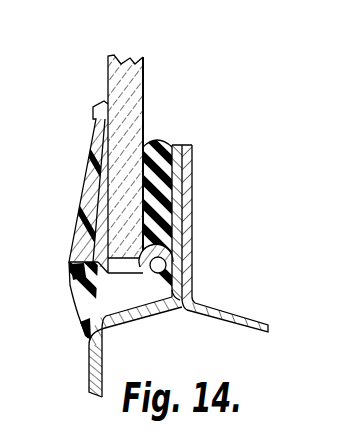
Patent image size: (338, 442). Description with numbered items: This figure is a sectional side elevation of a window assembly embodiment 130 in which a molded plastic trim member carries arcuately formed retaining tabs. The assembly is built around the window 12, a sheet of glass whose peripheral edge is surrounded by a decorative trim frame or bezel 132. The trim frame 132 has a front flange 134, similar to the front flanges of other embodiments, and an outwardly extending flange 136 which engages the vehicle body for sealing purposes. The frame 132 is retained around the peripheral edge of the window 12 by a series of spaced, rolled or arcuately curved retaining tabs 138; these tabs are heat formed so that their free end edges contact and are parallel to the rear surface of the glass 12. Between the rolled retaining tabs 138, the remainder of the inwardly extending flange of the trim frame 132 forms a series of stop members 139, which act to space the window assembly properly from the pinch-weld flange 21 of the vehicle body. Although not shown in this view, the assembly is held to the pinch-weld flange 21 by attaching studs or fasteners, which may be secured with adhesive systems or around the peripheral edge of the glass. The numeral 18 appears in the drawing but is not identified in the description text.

The window 12 is at (131, 73).
The resilient member 18 is at (153, 142).
The pinch-weld flange 21 is at (185, 181).
The window assembly embodiment 130 is at (61, 104).
The decorative trim frame 132 is at (88, 161).
The front flange 134 is at (93, 207).
The outwardly extending flange 136 is at (80, 328).
The retaining tabs 138 is at (152, 270).
The stop members 139 is at (173, 284).